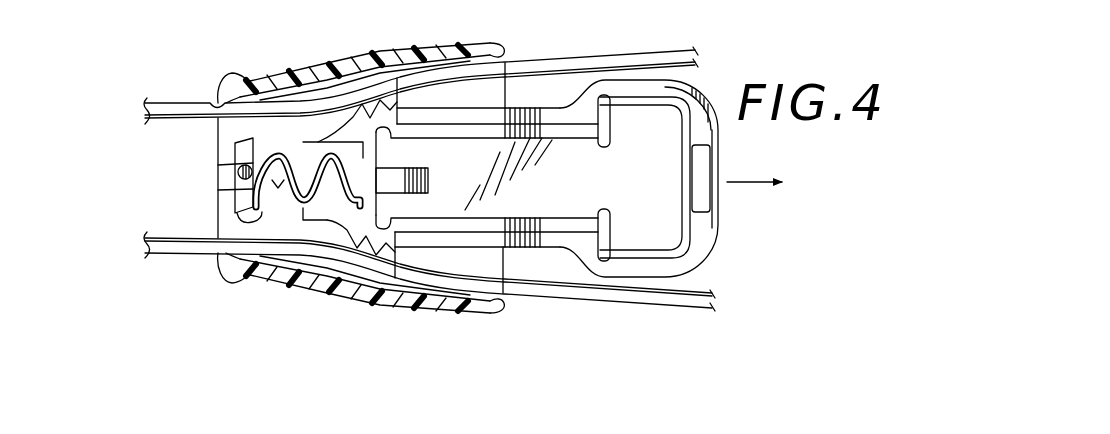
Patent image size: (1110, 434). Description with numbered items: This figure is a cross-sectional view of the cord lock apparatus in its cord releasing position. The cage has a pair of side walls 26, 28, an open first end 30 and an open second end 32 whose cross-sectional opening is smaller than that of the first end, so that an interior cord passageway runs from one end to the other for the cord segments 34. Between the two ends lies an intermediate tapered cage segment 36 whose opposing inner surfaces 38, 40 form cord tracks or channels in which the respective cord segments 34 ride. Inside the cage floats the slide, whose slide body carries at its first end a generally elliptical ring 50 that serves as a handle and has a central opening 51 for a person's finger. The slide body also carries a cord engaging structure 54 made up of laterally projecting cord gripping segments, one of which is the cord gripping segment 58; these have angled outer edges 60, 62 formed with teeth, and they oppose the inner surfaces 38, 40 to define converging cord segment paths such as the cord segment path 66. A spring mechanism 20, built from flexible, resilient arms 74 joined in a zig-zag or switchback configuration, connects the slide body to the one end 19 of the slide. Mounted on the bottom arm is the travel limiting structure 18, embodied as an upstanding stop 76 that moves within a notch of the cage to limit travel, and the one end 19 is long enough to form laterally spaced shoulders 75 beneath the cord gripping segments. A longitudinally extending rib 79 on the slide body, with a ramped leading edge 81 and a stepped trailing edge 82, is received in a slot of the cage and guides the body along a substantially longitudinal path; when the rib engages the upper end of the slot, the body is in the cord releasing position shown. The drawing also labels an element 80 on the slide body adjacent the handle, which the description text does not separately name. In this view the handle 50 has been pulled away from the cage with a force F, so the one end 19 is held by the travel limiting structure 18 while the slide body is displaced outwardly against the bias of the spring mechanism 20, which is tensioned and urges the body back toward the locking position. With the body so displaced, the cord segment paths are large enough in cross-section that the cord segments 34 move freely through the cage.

The travel limiting structure 18 is at (226, 172).
The one end of the slide 19 is at (234, 147).
The spring mechanism 20 is at (284, 142).
The side wall 26 is at (322, 297).
The side wall 28 is at (358, 46).
The open first end 30 is at (513, 62).
The open second end 32 is at (215, 101).
The cord segments 34 is at (674, 50).
The intermediate tapered cage segment 36 is at (338, 70).
The inner surface 38 is at (324, 86).
The inner surface 40 is at (378, 296).
The elliptical ring 50 is at (717, 247).
The central opening 51 is at (666, 116).
The cord engaging structure 54 is at (420, 96).
The cord gripping segment 58 is at (379, 93).
The angled outer edge 60 is at (397, 258).
The angled outer edge 62 is at (387, 108).
The cord segment path 66 is at (318, 250).
The flexible resilient arms 74 is at (309, 184).
The shoulders 75 is at (238, 216).
The stop 76 is at (238, 176).
The rib 79 is at (415, 195).
The U-shaped channel member 80 is at (604, 143).
The ramped leading edge 81 is at (390, 178).
The stepped trailing edge 82 is at (428, 178).
The force F is at (766, 182).